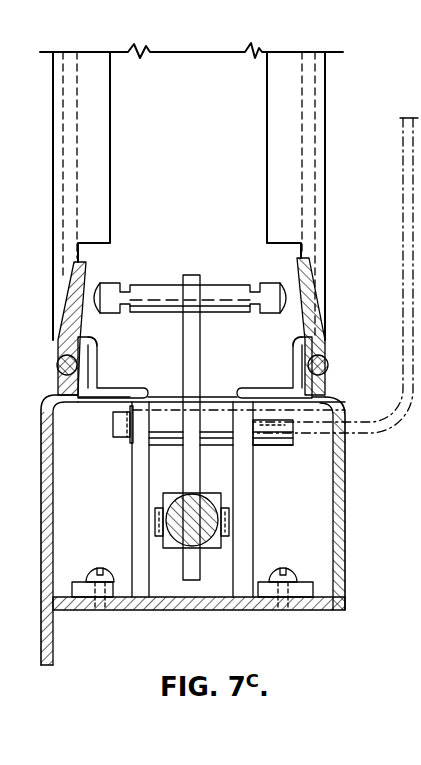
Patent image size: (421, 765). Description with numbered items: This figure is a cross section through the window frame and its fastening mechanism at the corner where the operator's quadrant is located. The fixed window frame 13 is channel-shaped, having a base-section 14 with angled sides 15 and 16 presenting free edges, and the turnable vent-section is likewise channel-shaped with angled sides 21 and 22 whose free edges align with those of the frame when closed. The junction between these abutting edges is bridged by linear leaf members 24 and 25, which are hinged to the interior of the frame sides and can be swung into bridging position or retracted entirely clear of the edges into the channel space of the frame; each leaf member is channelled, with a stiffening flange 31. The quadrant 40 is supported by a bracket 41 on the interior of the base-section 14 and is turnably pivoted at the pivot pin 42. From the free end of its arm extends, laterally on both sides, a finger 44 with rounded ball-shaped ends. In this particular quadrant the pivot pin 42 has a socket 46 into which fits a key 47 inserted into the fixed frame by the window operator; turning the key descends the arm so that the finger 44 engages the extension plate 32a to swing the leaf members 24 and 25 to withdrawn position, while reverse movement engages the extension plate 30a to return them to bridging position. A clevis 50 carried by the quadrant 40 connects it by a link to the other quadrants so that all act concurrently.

The fixed window frame 13 is at (192, 576).
The base-section 14 is at (196, 609).
The angled side 15 is at (353, 530).
The angled side 16 is at (42, 500).
The angled side 21 is at (75, 288).
The angled side 22 is at (305, 275).
The leaf member 24 is at (320, 372).
The leaf member 25 is at (62, 370).
The extension plate 30a is at (97, 344).
The reinforcing flange 31 is at (108, 160).
The extension plate 32a is at (97, 383).
The quadrant 40 is at (182, 457).
The bracket 41 is at (132, 515).
The pivot pin 42 is at (113, 425).
The finger 44 is at (160, 285).
The socket 46 is at (283, 447).
The key 47 is at (400, 278).
The clevis 50 is at (200, 548).